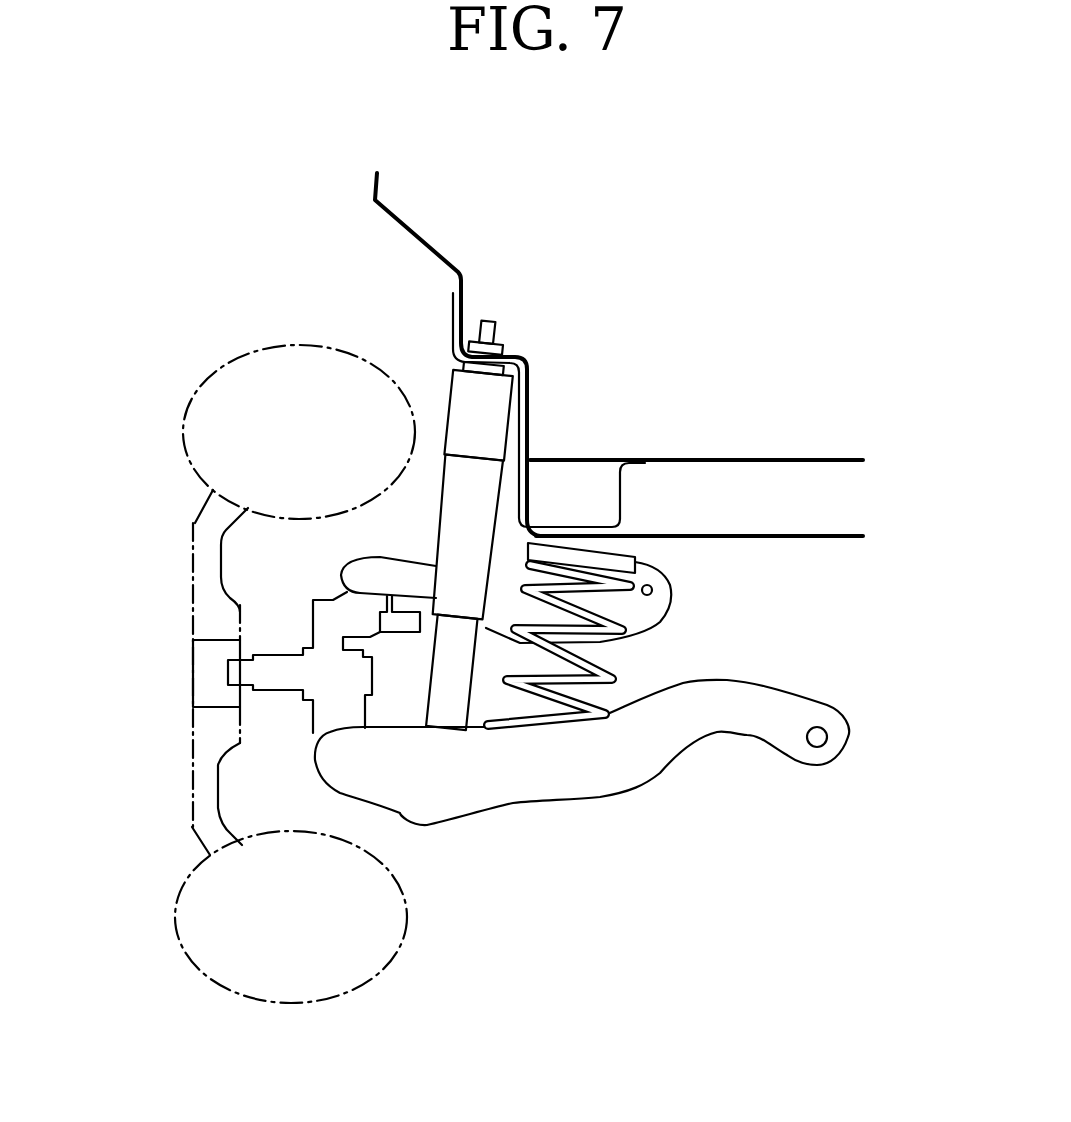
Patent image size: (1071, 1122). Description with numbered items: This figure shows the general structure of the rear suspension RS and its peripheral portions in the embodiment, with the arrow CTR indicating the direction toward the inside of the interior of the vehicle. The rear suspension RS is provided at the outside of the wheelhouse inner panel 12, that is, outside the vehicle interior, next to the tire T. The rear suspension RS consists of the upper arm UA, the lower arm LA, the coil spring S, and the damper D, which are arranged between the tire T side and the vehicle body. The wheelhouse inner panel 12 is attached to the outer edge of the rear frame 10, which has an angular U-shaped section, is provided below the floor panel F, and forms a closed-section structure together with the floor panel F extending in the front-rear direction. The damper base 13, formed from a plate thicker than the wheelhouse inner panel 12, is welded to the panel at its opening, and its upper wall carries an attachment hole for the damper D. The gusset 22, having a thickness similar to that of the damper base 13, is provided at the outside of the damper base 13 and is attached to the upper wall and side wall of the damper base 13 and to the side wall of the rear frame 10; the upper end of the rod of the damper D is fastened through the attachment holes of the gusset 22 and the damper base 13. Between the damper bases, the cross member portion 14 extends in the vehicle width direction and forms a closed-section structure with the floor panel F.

The rear frame 10 is at (627, 495).
The wheelhouse inner panel 12 is at (417, 232).
The damper base 13 is at (518, 362).
The cross member portion 14 is at (813, 538).
The gusset 22 is at (508, 483).
The damper D is at (437, 525).
The floor panel F is at (743, 460).
The coil spring S is at (615, 672).
The upper arm UA is at (350, 565).
The lower arm LA is at (617, 800).
The tire T is at (193, 628).
The rear suspension RS is at (744, 800).
The direction toward the inside of the vehicle interior CTR is at (355, 1057).